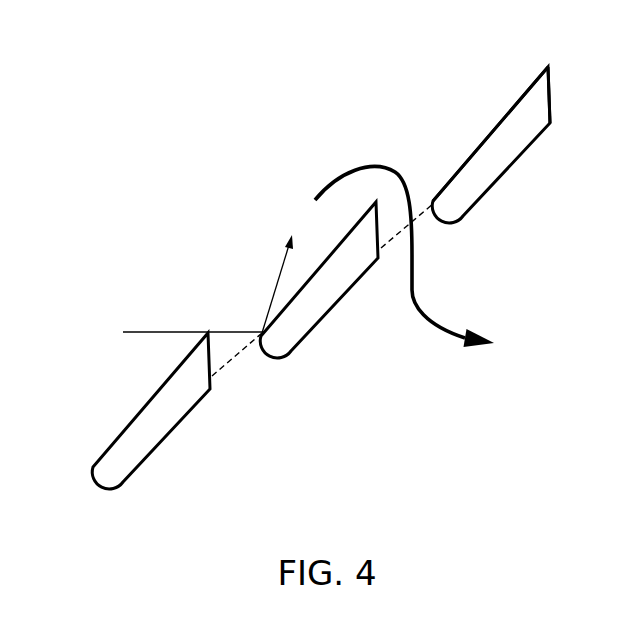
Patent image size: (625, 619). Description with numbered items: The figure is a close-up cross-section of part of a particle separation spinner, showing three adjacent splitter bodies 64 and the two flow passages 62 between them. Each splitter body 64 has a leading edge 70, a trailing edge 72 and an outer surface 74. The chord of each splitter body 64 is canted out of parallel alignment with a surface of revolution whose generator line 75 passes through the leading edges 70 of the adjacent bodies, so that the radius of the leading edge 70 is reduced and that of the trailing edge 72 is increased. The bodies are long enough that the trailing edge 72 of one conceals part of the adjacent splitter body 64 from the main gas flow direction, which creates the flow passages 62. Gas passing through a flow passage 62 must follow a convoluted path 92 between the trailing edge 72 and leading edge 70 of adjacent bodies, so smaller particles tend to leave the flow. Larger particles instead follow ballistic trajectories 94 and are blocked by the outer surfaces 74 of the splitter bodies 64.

The flow passage 62 is at (433, 228).
The splitter body 64 is at (497, 160).
The leading edge 70 is at (92, 469).
The trailing edge 72 is at (547, 66).
The outer surface 74 is at (498, 118).
The generator line 75 is at (232, 360).
The convoluted path 92 is at (352, 170).
The ballistic trajectory 94 is at (153, 332).